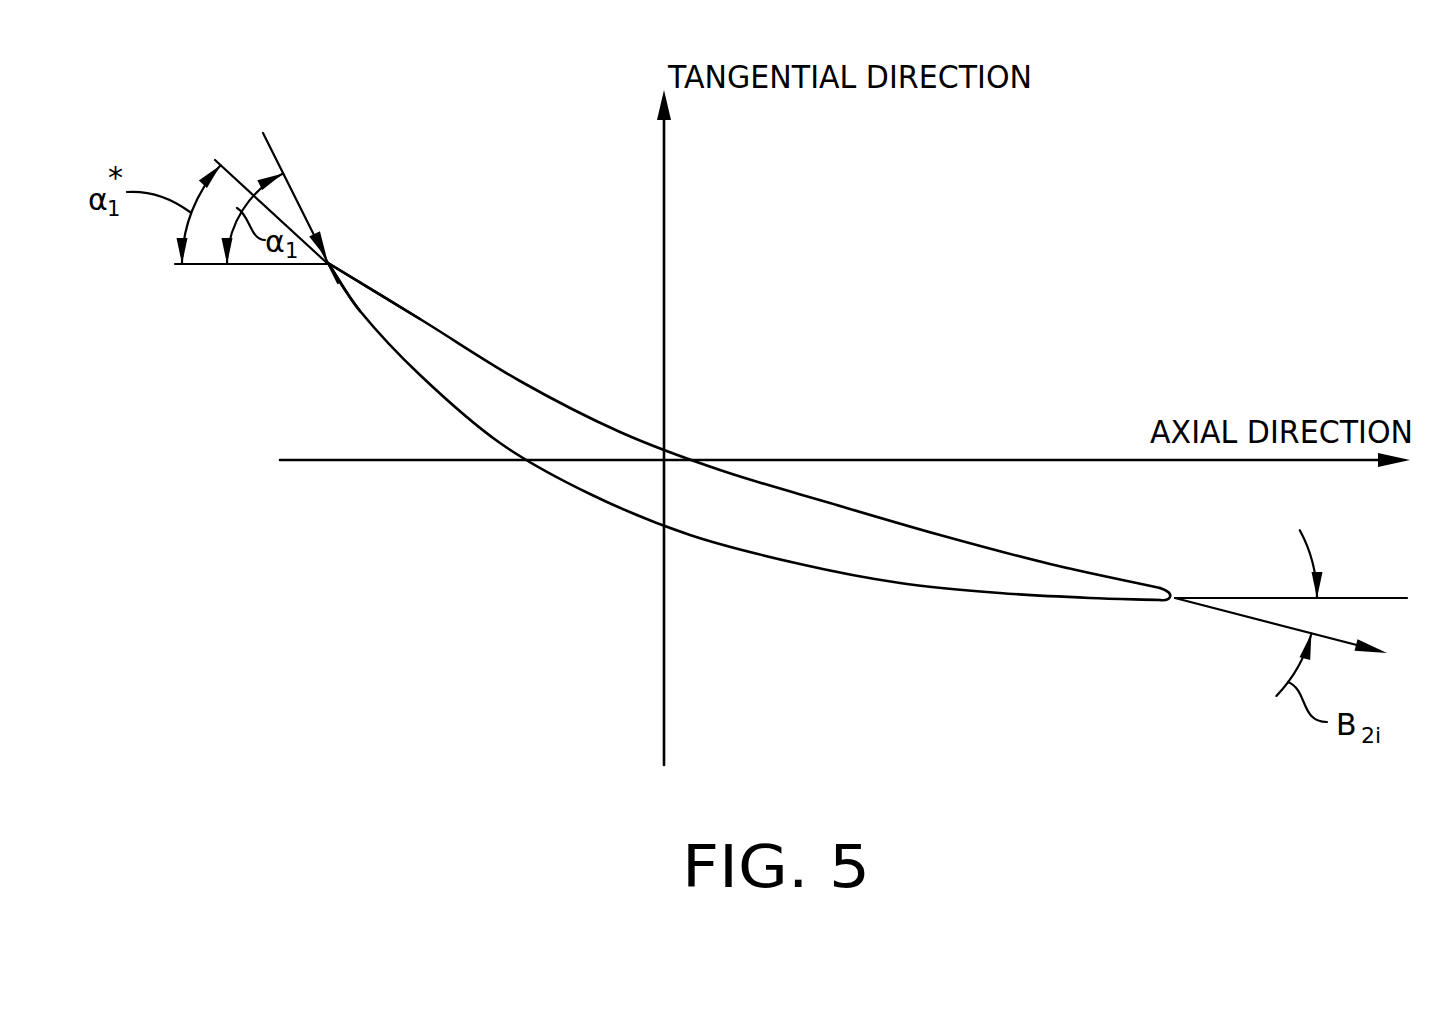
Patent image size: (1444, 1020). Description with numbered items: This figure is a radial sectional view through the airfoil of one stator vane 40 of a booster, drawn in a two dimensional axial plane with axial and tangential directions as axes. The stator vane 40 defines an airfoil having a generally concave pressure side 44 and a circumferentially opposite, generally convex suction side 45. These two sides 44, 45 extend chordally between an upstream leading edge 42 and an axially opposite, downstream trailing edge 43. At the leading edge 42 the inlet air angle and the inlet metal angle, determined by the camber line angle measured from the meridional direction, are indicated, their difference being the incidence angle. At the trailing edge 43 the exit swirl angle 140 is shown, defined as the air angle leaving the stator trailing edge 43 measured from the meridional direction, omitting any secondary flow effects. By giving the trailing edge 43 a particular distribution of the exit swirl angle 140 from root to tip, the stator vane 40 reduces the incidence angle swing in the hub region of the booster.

The stator vane 40 is at (751, 436).
The leading edge 42 is at (330, 263).
The trailing edge 43 is at (1173, 600).
The pressure side 44 is at (982, 542).
The suction side 45 is at (848, 577).
The exit swirl angle 140 is at (1308, 545).